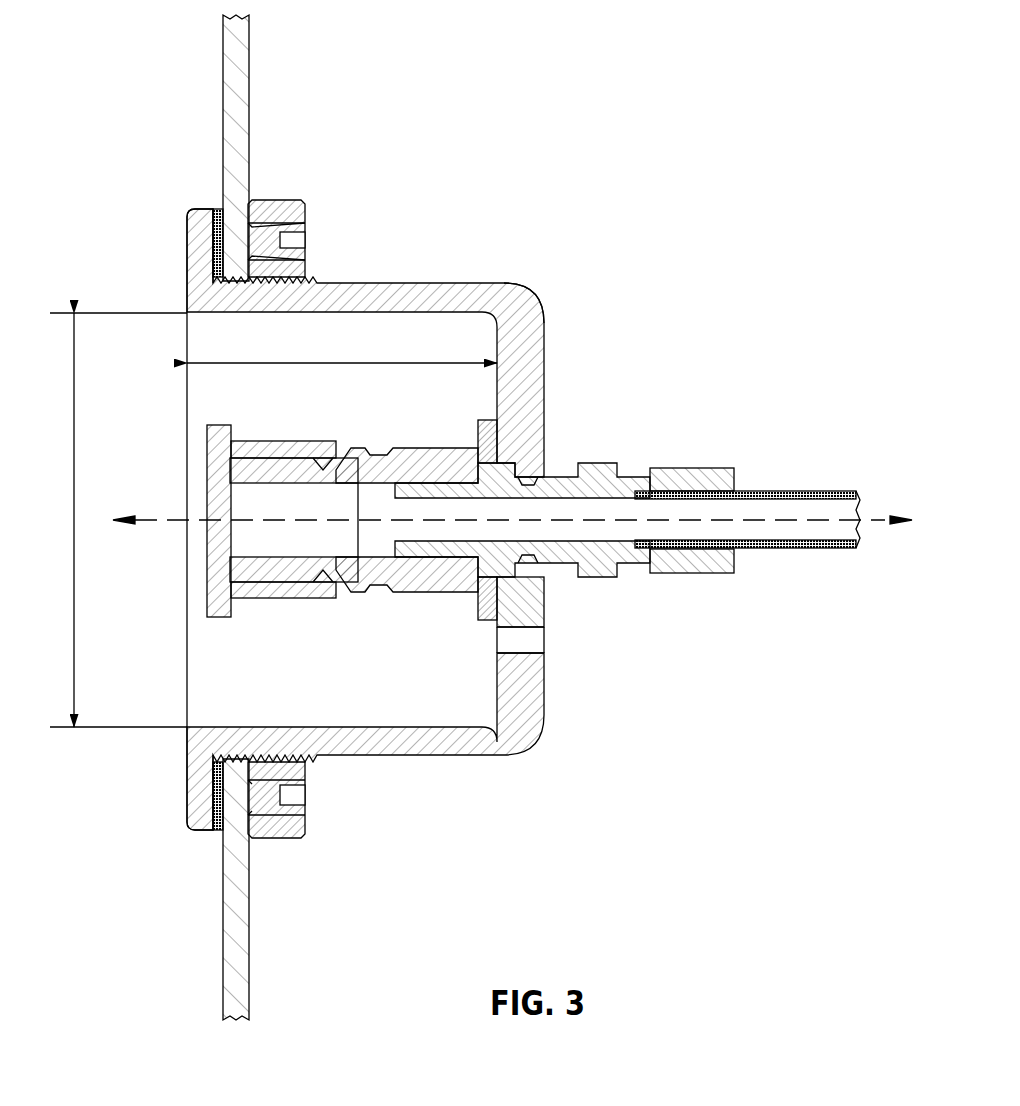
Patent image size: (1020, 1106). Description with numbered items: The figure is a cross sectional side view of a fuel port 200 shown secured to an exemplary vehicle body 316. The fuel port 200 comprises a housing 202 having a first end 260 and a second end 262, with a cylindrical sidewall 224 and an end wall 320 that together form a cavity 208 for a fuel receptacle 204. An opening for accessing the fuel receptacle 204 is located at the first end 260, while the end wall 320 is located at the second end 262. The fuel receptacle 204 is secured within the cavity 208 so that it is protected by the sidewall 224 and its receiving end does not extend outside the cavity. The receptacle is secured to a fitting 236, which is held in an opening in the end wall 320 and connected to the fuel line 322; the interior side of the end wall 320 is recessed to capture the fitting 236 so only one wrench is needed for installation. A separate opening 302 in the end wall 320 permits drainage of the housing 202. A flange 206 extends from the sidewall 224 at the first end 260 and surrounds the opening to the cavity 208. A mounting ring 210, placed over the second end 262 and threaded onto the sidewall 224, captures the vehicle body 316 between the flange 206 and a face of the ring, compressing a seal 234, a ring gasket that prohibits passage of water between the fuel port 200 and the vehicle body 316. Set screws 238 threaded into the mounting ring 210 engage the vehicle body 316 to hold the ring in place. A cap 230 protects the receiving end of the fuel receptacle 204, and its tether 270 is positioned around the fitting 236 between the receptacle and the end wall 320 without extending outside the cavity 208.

The fuel port 200 is at (480, 517).
The housing 202 is at (382, 524).
The fuel receptacle 204 is at (430, 446).
The flange 206 is at (197, 243).
The cavity 208 is at (240, 655).
The mounting ring 210 is at (333, 527).
The cylindrical sidewall 224 is at (402, 298).
The cap 230 is at (205, 500).
The seal 234 is at (219, 210).
The fitting 236 is at (541, 503).
The set screws 238 is at (282, 240).
The first end 260 is at (185, 397).
The second end 262 is at (543, 290).
The tether 270 is at (487, 610).
The opening 302 is at (520, 643).
The vehicle body 316 is at (237, 92).
The end wall 320 is at (533, 600).
The fuel line 322 is at (780, 490).